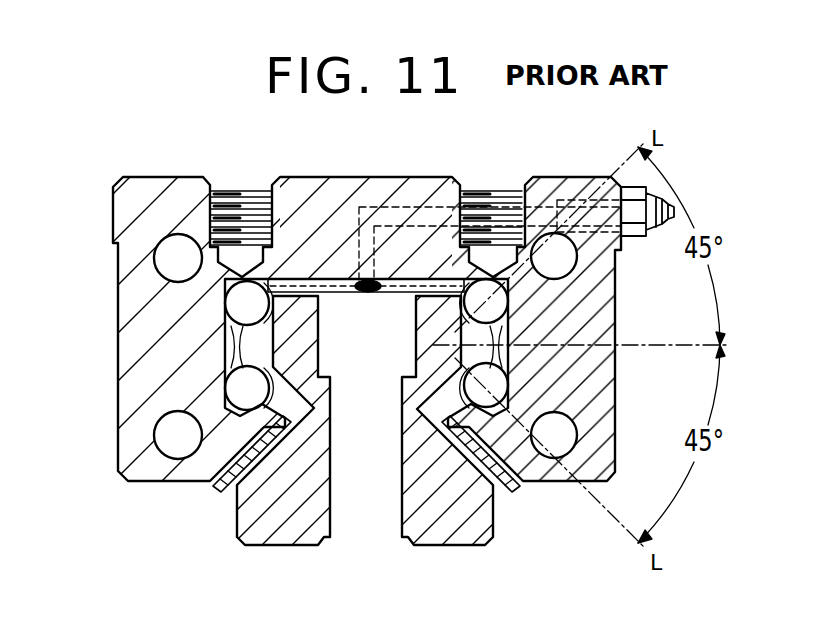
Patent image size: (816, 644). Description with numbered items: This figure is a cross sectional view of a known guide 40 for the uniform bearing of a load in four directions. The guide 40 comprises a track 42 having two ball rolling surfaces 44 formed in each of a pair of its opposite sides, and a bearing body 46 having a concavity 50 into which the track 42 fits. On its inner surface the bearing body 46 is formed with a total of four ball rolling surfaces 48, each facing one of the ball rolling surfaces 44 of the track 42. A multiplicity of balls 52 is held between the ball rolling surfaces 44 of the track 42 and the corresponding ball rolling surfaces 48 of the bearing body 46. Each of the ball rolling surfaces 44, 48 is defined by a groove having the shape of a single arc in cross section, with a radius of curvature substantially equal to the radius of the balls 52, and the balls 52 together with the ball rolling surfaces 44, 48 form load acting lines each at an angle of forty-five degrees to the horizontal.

The guide 40 is at (113, 202).
The track 42 is at (448, 532).
The ball rolling surfaces 44 is at (228, 350).
The bearing body 46 is at (367, 278).
The ball rolling surfaces 48 is at (226, 297).
The concavity 50 is at (272, 283).
The balls 52 is at (225, 470).